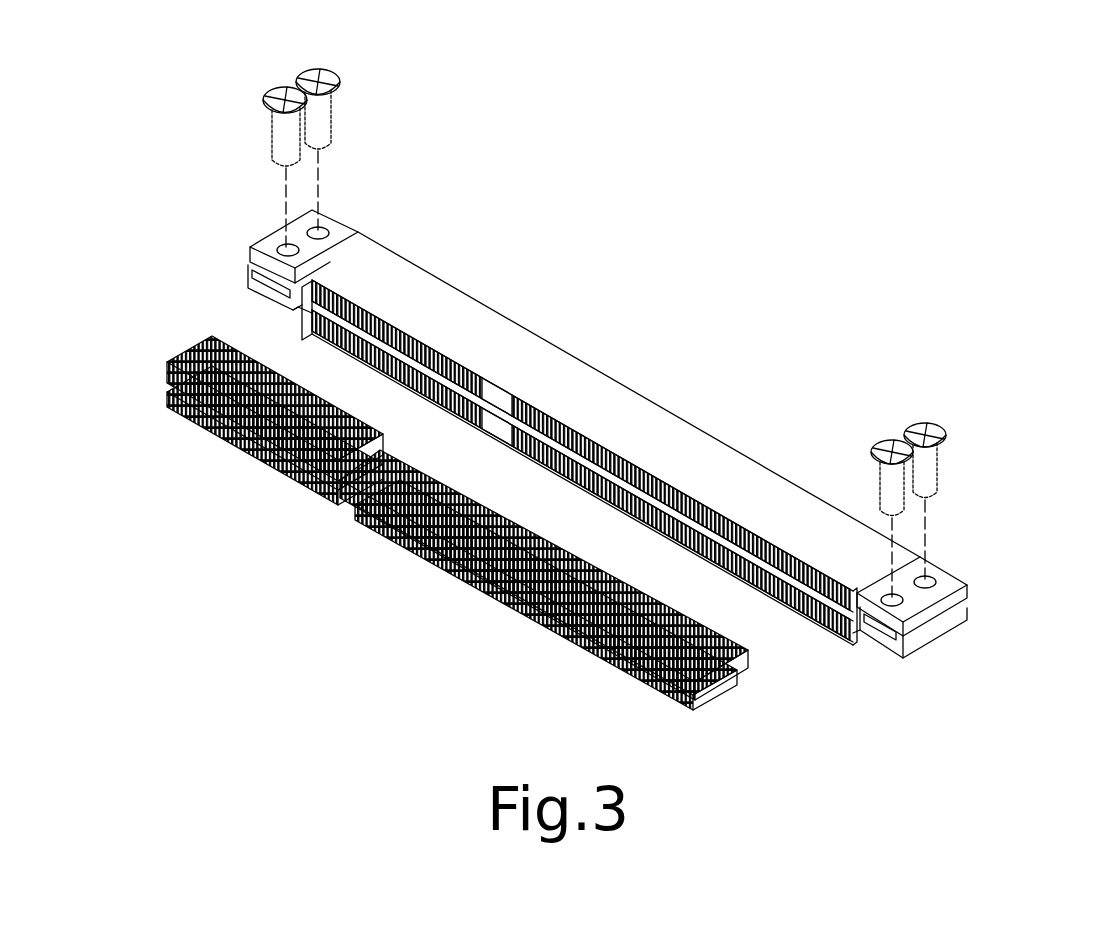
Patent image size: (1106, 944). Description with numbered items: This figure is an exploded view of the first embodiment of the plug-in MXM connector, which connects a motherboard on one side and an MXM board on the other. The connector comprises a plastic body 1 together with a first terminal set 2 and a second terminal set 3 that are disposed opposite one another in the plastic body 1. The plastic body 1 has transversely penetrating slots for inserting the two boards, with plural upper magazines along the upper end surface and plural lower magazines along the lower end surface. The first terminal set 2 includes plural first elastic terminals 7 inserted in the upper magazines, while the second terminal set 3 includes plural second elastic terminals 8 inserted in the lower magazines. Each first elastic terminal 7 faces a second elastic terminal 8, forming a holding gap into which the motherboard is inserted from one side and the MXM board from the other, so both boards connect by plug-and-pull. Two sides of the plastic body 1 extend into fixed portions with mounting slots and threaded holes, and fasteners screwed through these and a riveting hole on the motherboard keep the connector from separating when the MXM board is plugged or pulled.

The plastic body 1 is at (630, 412).
The first terminal set 2 is at (172, 342).
The second terminal set 3 is at (172, 427).
The first elastic terminal 7 is at (752, 650).
The second elastic terminal 8 is at (735, 690).